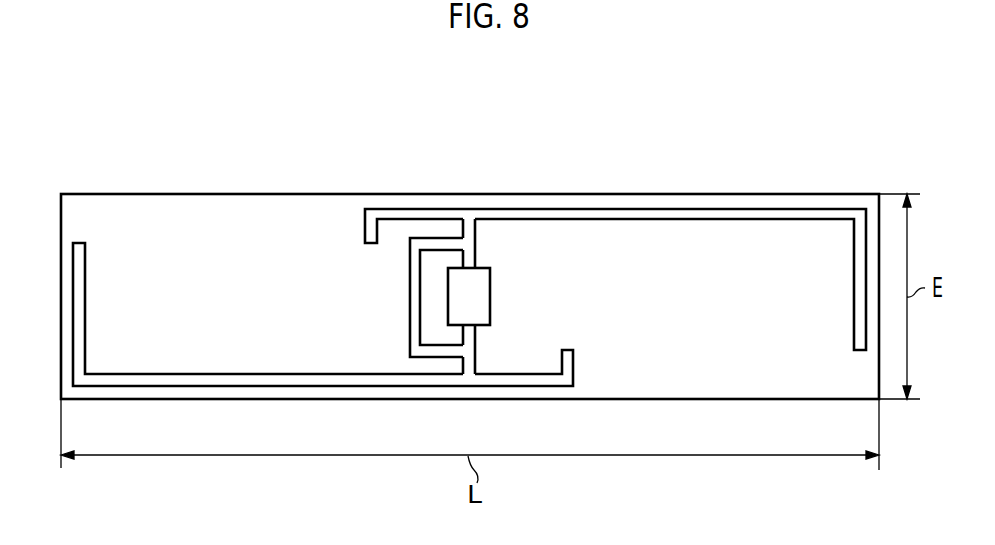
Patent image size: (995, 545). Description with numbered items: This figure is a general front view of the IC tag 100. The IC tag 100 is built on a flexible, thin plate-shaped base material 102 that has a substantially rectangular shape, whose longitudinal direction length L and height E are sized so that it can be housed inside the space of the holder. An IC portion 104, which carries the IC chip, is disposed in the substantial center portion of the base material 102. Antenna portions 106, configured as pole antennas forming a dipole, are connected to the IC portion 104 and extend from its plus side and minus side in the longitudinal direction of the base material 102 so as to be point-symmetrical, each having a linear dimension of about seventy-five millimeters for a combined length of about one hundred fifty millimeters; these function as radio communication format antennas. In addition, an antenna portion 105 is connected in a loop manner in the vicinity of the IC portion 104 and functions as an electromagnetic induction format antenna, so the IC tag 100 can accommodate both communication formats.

The IC tag 100 is at (562, 151).
The base material 102 is at (213, 227).
The IC portion 104 is at (481, 297).
The antenna portion 105 is at (413, 300).
The antenna portions 106 is at (698, 216).